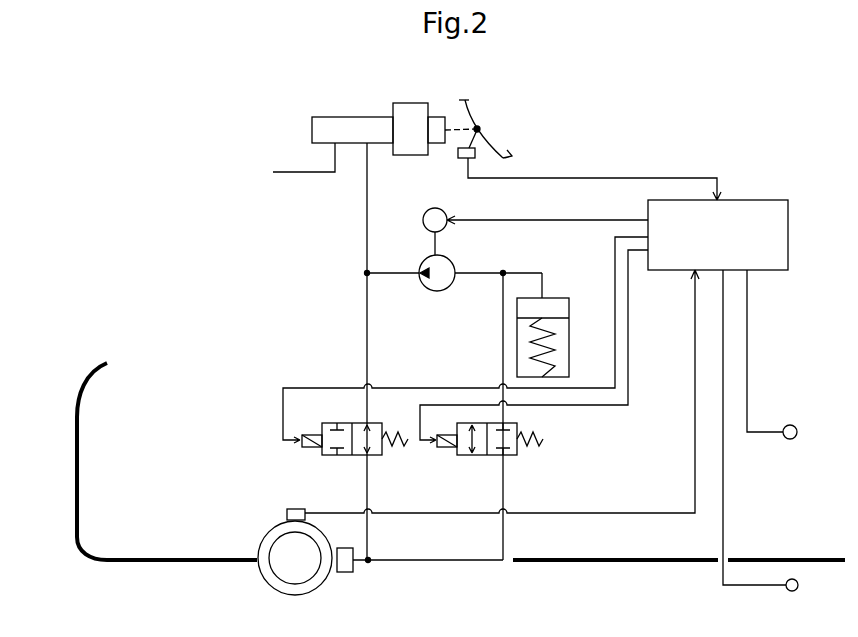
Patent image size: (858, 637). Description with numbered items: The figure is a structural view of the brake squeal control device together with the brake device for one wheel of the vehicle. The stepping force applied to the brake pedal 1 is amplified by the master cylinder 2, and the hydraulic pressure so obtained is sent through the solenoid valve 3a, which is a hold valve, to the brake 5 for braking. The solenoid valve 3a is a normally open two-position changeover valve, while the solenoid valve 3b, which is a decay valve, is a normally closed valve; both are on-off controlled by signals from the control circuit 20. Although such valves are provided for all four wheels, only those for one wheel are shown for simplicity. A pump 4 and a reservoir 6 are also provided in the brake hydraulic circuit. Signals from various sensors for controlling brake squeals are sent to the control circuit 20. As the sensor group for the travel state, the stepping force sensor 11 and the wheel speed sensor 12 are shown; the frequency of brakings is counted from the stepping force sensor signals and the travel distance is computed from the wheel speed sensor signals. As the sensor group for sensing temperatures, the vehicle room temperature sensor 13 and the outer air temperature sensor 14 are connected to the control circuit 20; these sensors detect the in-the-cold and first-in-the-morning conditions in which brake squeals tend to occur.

The brake pedal 1 is at (496, 114).
The master cylinder 2 is at (340, 128).
The solenoid valve 3a is at (336, 456).
The solenoid valve 3b is at (474, 456).
The pump 4 is at (435, 290).
The brake 5 is at (346, 572).
The reservoir 6 is at (555, 298).
The stepping force sensor 11 is at (457, 152).
The wheel speed sensor 12 is at (295, 508).
The vehicle room temperature sensor 13 is at (796, 425).
The outer air temperature sensor 14 is at (799, 590).
The control circuit 20 is at (769, 200).